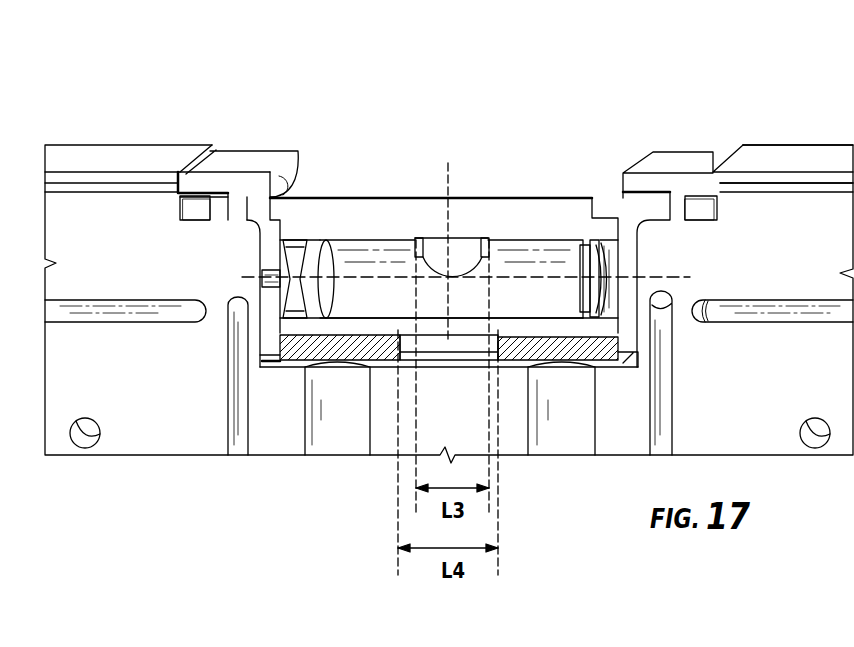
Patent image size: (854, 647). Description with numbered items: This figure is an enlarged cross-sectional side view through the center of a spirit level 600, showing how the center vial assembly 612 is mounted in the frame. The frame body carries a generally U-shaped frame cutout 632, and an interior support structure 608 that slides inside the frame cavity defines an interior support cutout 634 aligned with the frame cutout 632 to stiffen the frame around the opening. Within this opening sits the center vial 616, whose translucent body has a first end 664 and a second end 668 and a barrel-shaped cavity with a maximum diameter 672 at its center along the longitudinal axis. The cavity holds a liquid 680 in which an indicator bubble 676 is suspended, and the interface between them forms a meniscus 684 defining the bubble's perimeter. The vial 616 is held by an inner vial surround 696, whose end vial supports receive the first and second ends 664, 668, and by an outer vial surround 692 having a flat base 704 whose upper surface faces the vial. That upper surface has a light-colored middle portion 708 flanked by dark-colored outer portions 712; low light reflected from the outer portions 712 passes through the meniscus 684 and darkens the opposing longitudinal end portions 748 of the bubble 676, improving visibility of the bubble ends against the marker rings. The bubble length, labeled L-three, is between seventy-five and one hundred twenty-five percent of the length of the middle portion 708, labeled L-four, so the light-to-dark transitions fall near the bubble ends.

The spirit level 600 is at (206, 68).
The interior support structure 608 is at (767, 182).
The center vial assembly 612 is at (470, 70).
The center vial 616 is at (535, 255).
The frame cutout 632 is at (717, 160).
The interior support cutout 634 is at (635, 362).
The first end 664 is at (600, 232).
The second end 668 is at (288, 228).
The maximum diameter 672 is at (452, 192).
The indicator bubble 676 is at (440, 247).
The liquid 680 is at (363, 257).
The meniscus 684 is at (467, 263).
The outer vial surround 692 is at (242, 160).
The inner vial surround 696 is at (297, 210).
The flat base 704 is at (273, 360).
The middle portion 708 is at (433, 343).
The outer portions 712 is at (332, 348).
The longitudinal end portions 748 is at (417, 240).